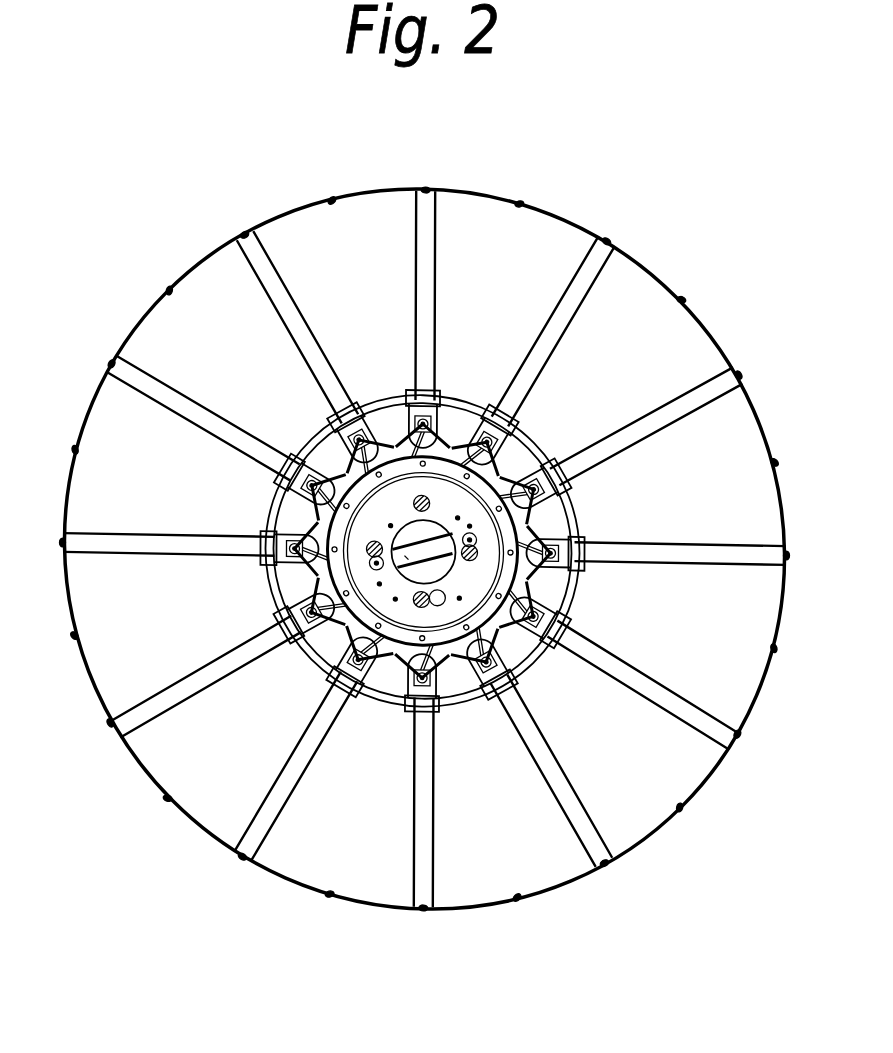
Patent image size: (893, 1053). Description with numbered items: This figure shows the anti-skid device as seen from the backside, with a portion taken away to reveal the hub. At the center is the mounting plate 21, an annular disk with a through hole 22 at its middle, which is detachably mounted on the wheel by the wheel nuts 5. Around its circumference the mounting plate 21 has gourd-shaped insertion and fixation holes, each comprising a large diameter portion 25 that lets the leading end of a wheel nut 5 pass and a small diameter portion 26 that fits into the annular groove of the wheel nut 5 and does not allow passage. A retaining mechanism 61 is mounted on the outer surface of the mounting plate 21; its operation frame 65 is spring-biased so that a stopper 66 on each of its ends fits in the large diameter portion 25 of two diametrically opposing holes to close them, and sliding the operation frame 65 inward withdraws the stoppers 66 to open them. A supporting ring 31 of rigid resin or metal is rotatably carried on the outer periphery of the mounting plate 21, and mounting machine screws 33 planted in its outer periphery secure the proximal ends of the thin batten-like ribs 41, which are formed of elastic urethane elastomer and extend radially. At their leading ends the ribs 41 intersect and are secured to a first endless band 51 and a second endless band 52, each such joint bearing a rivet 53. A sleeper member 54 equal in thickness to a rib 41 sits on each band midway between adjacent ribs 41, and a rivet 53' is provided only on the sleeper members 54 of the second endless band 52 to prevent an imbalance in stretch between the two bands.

The wheel nut 5 is at (400, 405).
The mounting plate 21 is at (446, 692).
The through hole 22 is at (367, 533).
The large diameter portion 25 is at (528, 655).
The small diameter portion 26 is at (384, 692).
The supporting ring 31 is at (558, 500).
The mounting machine screw 33 is at (316, 462).
The rib 41 is at (417, 322).
The first endless band 51 is at (446, 546).
The second endless band 52 is at (638, 847).
The rivet 53 is at (424, 548).
The rivet 53' is at (425, 573).
The sleeper member 54 is at (519, 202).
The retaining mechanism 61 is at (409, 530).
The operation frame 65 is at (343, 596).
The stopper 66 is at (505, 422).